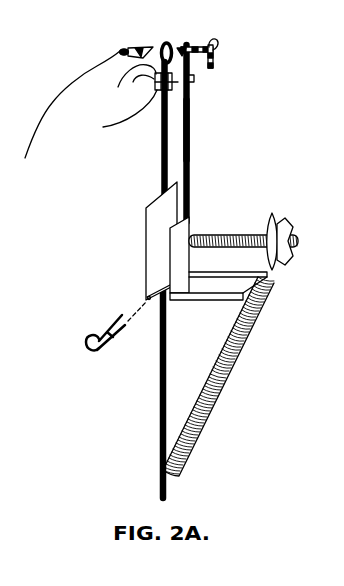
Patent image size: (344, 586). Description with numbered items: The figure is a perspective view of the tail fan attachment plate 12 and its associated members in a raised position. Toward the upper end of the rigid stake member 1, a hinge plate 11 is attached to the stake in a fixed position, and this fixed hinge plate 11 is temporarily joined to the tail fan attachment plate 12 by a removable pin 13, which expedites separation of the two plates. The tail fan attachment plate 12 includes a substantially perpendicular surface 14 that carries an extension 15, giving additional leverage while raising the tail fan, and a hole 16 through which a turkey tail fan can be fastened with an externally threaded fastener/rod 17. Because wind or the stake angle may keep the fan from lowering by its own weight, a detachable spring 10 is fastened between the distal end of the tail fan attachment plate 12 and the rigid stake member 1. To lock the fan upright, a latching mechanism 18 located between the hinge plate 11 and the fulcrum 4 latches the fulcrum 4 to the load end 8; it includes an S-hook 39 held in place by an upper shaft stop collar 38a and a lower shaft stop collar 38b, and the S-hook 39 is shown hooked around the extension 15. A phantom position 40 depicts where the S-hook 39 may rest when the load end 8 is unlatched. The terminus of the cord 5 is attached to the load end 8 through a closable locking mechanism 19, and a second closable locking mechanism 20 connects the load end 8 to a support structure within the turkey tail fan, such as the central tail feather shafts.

The rigid stake member 1 is at (159, 378).
The fulcrum 4 is at (166, 42).
The cord 5 is at (71, 80).
The load end 8 is at (188, 44).
The detachable spring 10 is at (235, 362).
The hinge plate 11 is at (146, 245).
The tail fan attachment plate 12 is at (200, 300).
The removable pin 13 is at (92, 354).
The perpendicular surface 14 is at (190, 218).
The extension 15 is at (190, 128).
The hole 16 is at (188, 250).
The externally threaded fastener/rod 17 is at (299, 242).
The latching mechanism 18 is at (157, 84).
The closable locking mechanism 19 is at (130, 47).
The closable locking mechanism 20 is at (213, 49).
The upper shaft stop collar 38a is at (118, 87).
The lower shaft stop collar 38b is at (143, 118).
The S-hook 39 is at (194, 78).
The phantom position of the S-hook 40 is at (147, 88).